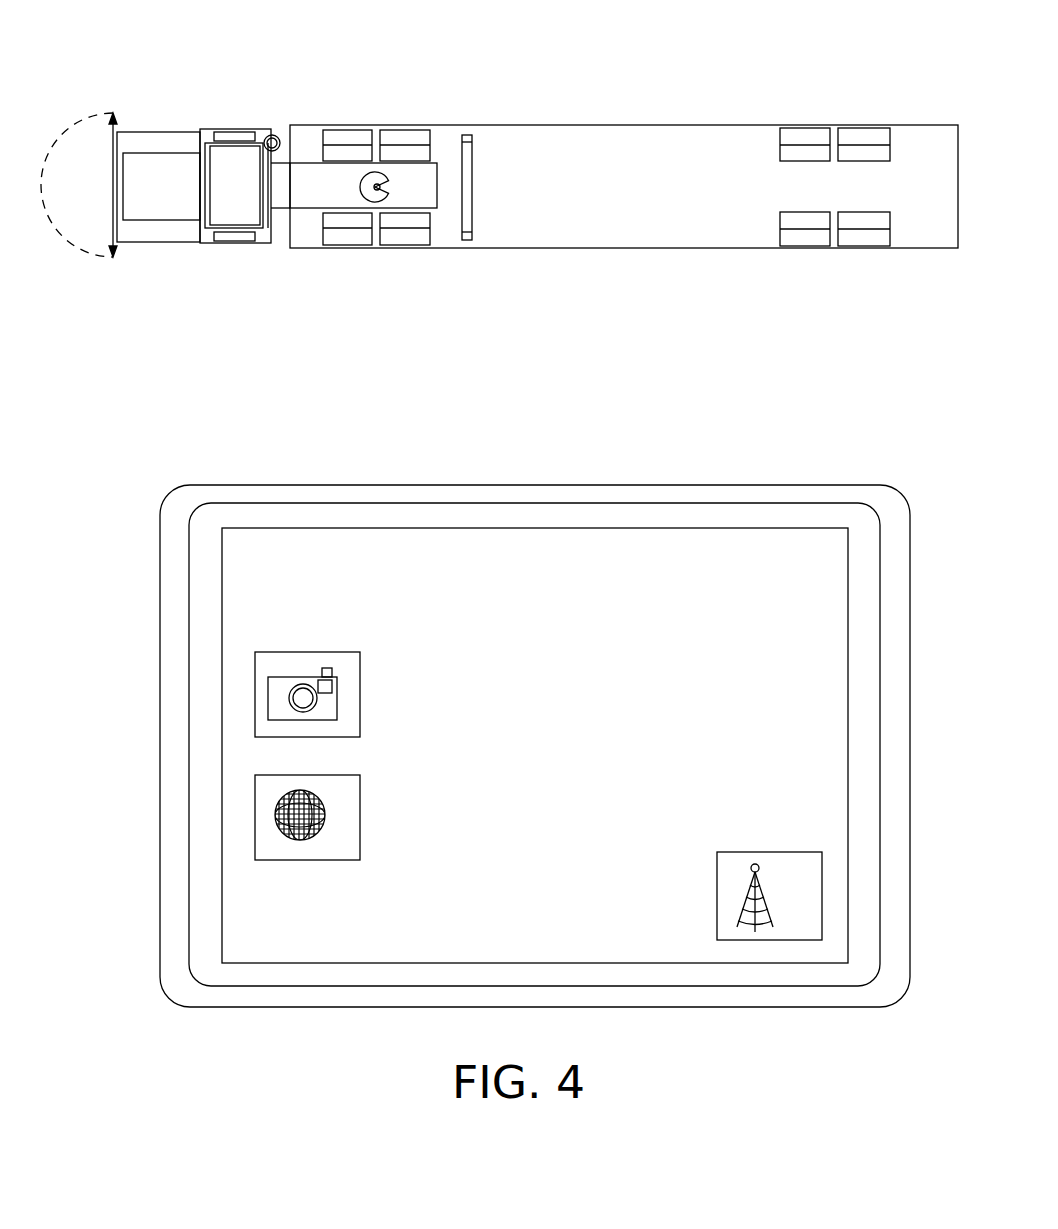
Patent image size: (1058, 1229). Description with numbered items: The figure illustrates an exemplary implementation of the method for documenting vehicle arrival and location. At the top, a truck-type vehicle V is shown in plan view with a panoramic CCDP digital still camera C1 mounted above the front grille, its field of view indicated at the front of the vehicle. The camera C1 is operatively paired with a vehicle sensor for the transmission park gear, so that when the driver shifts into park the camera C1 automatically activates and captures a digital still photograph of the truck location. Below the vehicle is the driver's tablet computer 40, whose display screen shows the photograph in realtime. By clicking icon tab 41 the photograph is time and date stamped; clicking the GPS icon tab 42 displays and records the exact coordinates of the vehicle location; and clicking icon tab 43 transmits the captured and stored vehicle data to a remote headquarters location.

The vehicle V is at (631, 118).
The panoramic CCDP digital still camera C1 is at (94, 185).
The tablet computer 40 is at (160, 578).
The icon tab 41 is at (360, 680).
The GPS icon tab 42 is at (360, 795).
The icon tab 43 is at (762, 852).